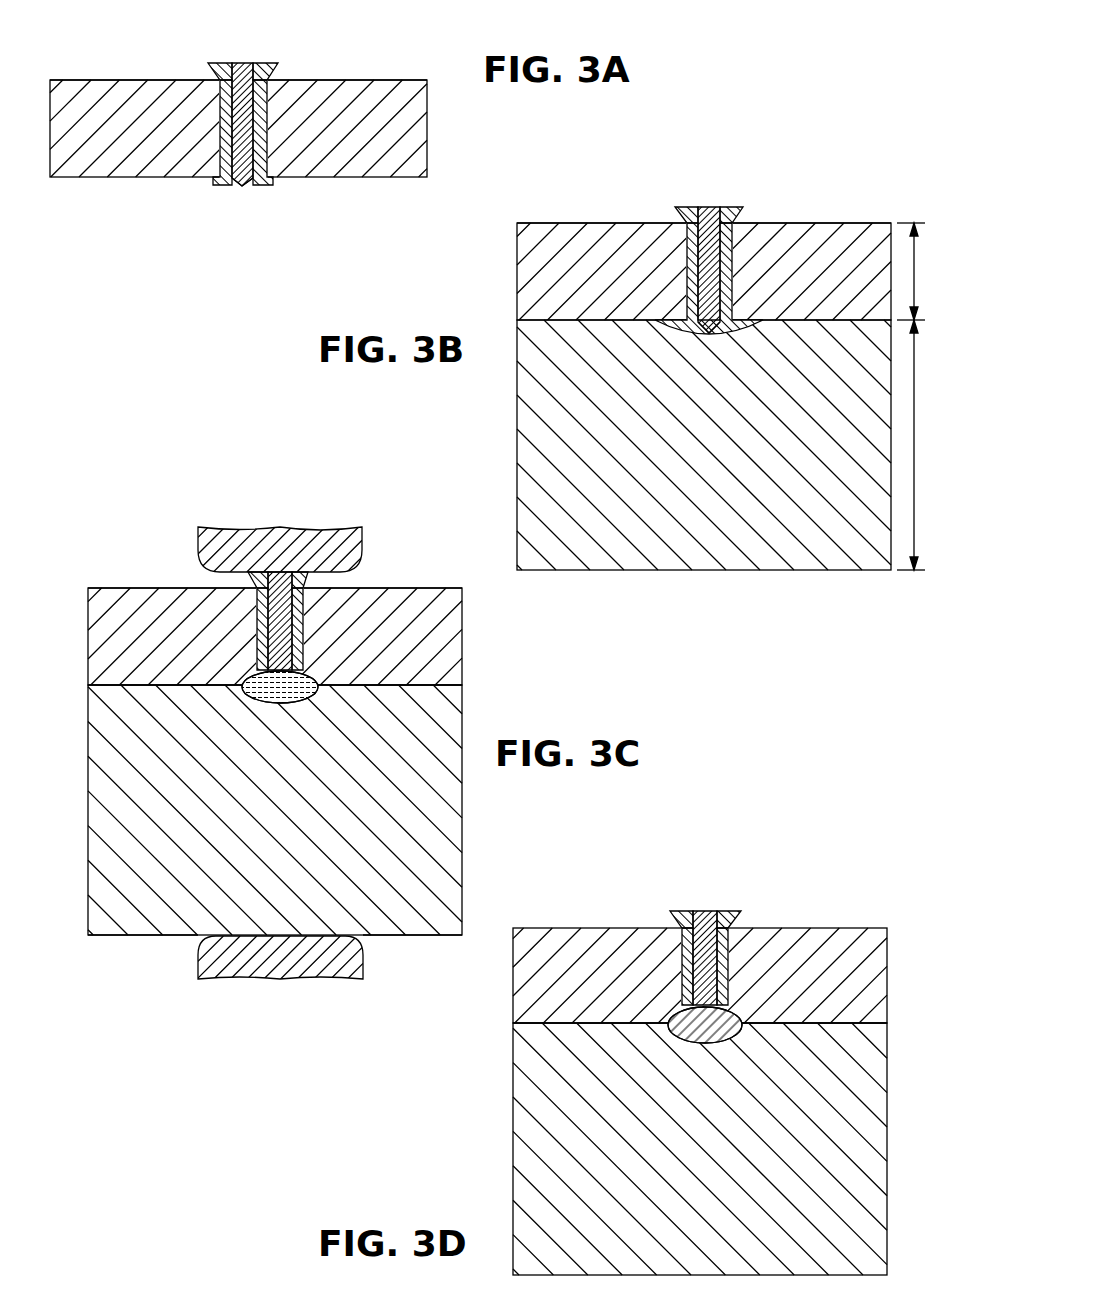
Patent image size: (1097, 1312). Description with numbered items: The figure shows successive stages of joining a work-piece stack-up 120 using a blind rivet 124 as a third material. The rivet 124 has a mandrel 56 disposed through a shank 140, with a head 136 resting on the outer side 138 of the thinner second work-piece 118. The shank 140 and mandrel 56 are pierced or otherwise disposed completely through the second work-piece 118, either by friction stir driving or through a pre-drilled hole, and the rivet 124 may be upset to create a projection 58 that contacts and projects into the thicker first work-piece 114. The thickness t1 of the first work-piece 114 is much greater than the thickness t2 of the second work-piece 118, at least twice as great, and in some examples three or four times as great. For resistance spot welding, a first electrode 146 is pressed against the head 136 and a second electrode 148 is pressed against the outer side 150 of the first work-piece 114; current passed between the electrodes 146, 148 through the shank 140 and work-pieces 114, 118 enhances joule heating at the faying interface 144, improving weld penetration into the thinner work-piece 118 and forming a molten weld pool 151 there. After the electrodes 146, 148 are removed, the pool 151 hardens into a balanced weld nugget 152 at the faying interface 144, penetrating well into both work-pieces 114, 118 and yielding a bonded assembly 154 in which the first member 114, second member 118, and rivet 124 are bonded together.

In FIG. 3A, the mandrel 56 is at (241, 63).
In FIG. 3B, the mandrel 56 is at (709, 207).
In FIG. 3C, the mandrel 56 is at (280, 621).
In FIG. 3D, the mandrel 56 is at (705, 958).
In FIG. 3A, the projection 58 is at (222, 187).
In FIG. 3B, the projection 58 is at (702, 331).
In FIG. 3B, the first work-piece 114 is at (536, 447).
In FIG. 3C, the first work-piece 114 is at (275, 810).
In FIG. 3D, the first work-piece 114 is at (526, 1130).
In FIG. 3A, the second work-piece 118 is at (412, 135).
In FIG. 3B, the second work-piece 118 is at (538, 280).
In FIG. 3C, the second work-piece 118 is at (450, 642).
In FIG. 3D, the second work-piece 118 is at (876, 950).
In FIG. 3B, the work-piece stack-up 120 is at (698, 364).
In FIG. 3C, the work-piece stack-up 120 is at (288, 726).
In FIG. 3A, the rivet 124 is at (246, 124).
In FIG. 3B, the rivet 124 is at (708, 270).
In FIG. 3C, the rivet 124 is at (269, 656).
In FIG. 3D, the rivet 124 is at (725, 977).
In FIG. 3A, the head 136 is at (216, 76).
In FIG. 3B, the head 136 is at (681, 218).
In FIG. 3C, the head 136 is at (250, 588).
In FIG. 3D, the head 136 is at (705, 919).
In FIG. 3A, the outer side 138 is at (103, 80).
In FIG. 3B, the outer side 138 is at (572, 223).
In FIG. 3C, the outer side 138 is at (137, 588).
In FIG. 3A, the shank 140 is at (266, 105).
In FIG. 3B, the shank 140 is at (731, 249).
In FIG. 3C, the shank 140 is at (308, 615).
In FIG. 3D, the shank 140 is at (705, 966).
In FIG. 3C, the faying interface 144 is at (103, 694).
In FIG. 3D, the faying interface 144 is at (863, 1036).
In FIG. 3C, the first electrode 146 is at (366, 529).
In FIG. 3C, the second electrode 148 is at (200, 948).
In FIG. 3C, the outer side 150 is at (386, 940).
In FIG. 3C, the molten weld pool 151 is at (258, 703).
In FIG. 3D, the weld nugget 152 is at (690, 1041).
In FIG. 3D, the bonded assembly 154 is at (500, 1023).
In FIG. 3B, the thickness of first work-piece t1 is at (916, 405).
In FIG. 3B, the thickness of second work-piece t2 is at (916, 280).